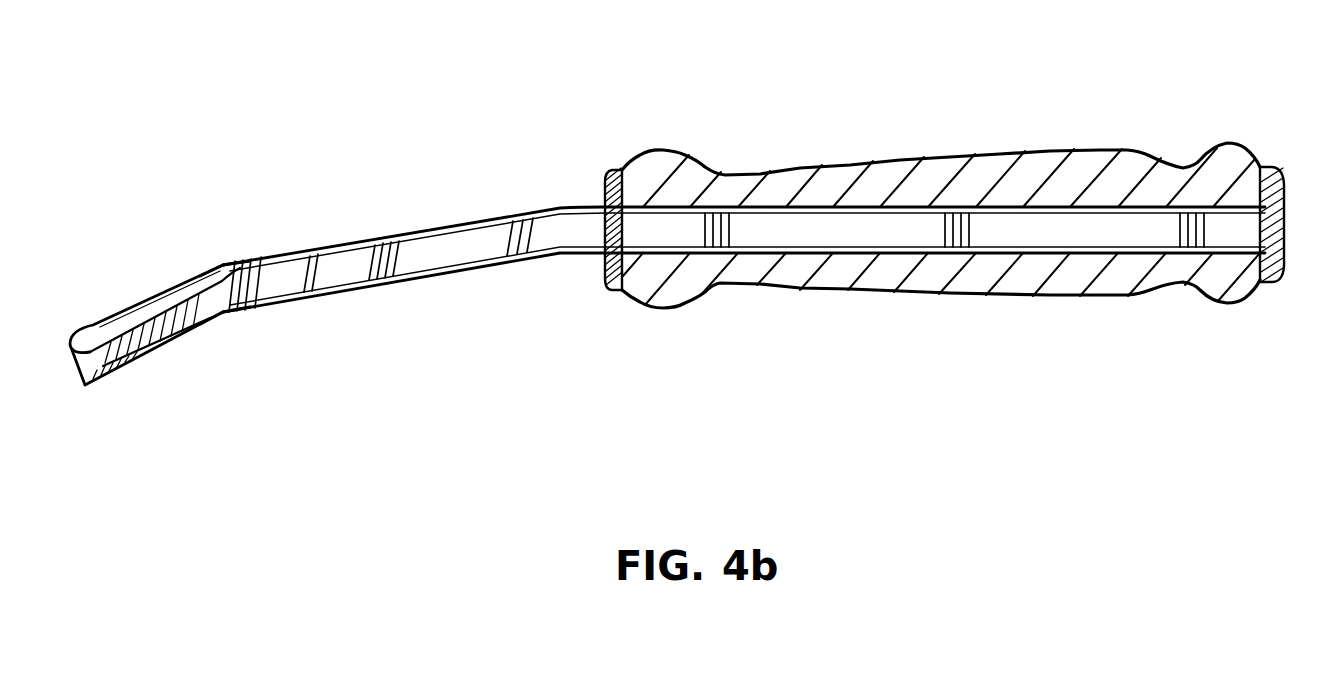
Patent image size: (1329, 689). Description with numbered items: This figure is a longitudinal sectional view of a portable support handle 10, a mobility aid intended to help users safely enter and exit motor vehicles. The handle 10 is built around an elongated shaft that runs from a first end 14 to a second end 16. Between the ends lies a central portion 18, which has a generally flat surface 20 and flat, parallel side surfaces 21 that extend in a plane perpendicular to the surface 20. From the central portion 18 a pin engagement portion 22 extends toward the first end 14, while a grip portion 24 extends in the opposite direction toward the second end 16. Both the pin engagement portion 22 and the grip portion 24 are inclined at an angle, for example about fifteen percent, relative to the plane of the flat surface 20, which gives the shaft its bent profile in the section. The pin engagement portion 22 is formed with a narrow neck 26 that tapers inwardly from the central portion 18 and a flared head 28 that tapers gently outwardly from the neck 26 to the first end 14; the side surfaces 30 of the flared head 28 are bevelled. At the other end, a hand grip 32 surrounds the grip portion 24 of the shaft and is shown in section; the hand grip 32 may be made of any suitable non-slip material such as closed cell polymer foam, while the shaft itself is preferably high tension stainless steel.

The portable support handle 10 is at (626, 95).
The first end 14 is at (68, 352).
The second end 16 is at (1282, 172).
The central portion 18 is at (526, 288).
The flat surface 20 is at (347, 242).
The side surfaces 21 is at (427, 257).
The pin engagement portion 22 is at (116, 280).
The grip portion 24 is at (755, 218).
The narrow neck 26 is at (262, 330).
The flared head 28 is at (195, 360).
The side surfaces 30 is at (118, 373).
The hand grip 32 is at (892, 168).